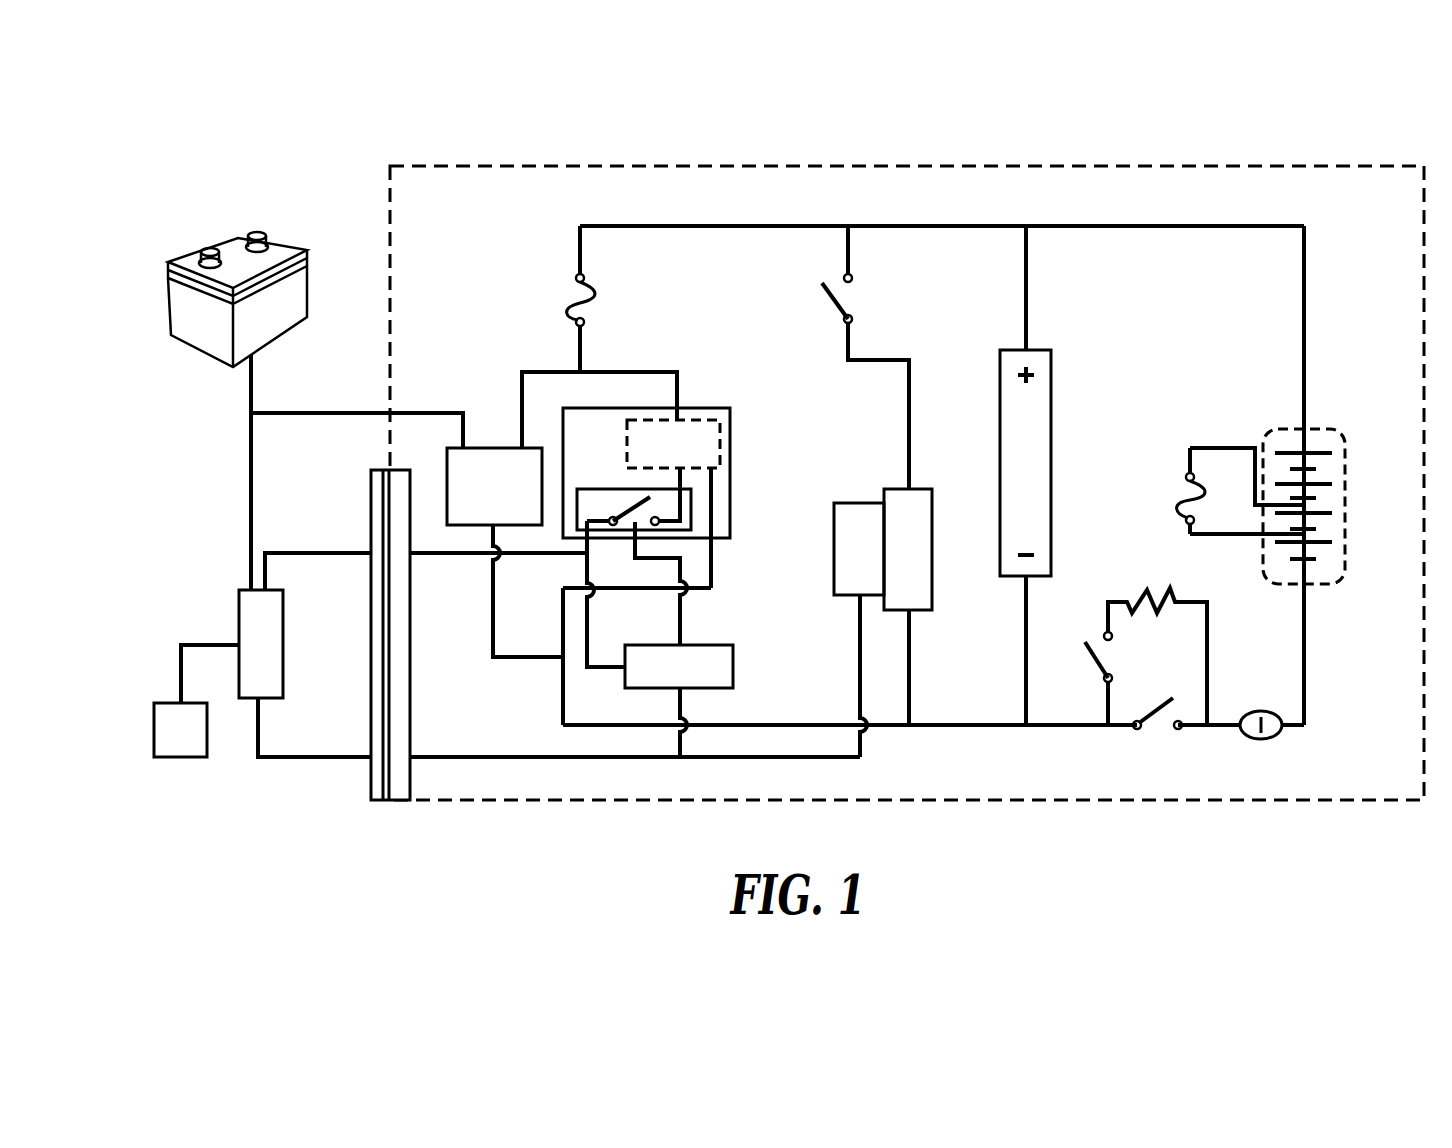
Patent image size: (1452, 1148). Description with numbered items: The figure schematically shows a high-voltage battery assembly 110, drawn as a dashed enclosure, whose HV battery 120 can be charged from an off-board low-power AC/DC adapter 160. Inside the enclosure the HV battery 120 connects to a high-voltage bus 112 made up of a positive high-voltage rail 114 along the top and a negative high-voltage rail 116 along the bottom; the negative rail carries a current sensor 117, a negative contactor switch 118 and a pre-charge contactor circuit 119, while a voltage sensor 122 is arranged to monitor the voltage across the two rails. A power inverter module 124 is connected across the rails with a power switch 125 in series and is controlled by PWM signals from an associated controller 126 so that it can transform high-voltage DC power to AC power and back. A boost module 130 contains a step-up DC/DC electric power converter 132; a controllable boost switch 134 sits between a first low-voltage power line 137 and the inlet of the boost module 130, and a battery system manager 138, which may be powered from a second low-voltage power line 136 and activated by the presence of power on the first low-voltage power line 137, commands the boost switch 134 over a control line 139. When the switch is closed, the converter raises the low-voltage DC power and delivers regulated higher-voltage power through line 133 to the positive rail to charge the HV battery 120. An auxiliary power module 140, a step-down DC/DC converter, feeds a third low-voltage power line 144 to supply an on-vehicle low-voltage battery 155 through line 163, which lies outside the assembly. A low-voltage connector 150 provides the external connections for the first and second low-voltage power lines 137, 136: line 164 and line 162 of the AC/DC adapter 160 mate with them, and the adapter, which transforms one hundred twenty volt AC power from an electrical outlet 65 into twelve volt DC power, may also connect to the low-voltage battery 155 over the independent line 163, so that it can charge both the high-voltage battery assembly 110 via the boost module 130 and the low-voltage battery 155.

The electrical outlet 65 is at (166, 746).
The high-voltage battery assembly 110 is at (491, 156).
The high-voltage bus 112 is at (1314, 290).
The positive high-voltage rail 114 is at (1166, 229).
The negative high-voltage rail 116 is at (962, 727).
The current sensor 117 is at (1273, 740).
The negative contactor switch 118 is at (1158, 727).
The pre-charge contactor circuit 119 is at (1136, 576).
The HV battery 120 is at (1320, 426).
The voltage sensor 122 is at (1051, 447).
The power inverter module 124 is at (932, 578).
The power switch 125 is at (850, 300).
The controller 126 is at (858, 503).
The power boost module 130 is at (718, 398).
The step-up DC/DC electric power converter 132 is at (652, 459).
The line 133 is at (625, 372).
The boost switch 134 is at (693, 510).
The second low-voltage power line 136 is at (527, 757).
The first low-voltage power line 137 is at (429, 556).
The battery system manager 138 is at (733, 667).
The control line 139 is at (683, 625).
The auxiliary power module 140 is at (500, 447).
The third low-voltage power line 144 is at (407, 412).
The low-voltage connector 150 is at (383, 801).
The low-voltage battery 155 is at (282, 242).
The low-power AC/DC adapter 160 is at (239, 604).
The line 162 is at (340, 755).
The line 163 is at (253, 379).
The line 164 is at (333, 551).